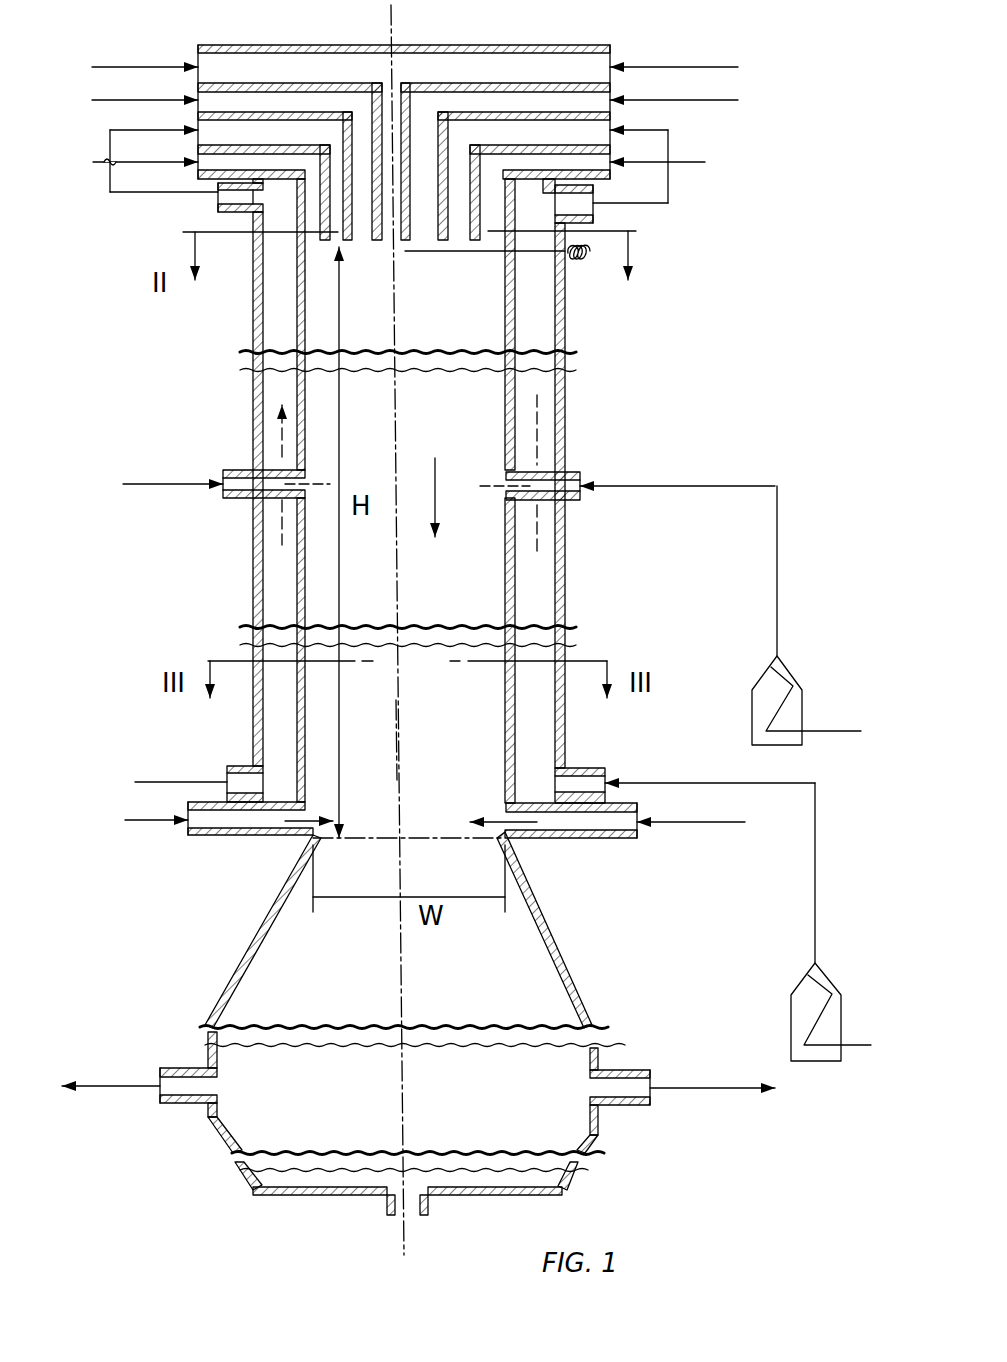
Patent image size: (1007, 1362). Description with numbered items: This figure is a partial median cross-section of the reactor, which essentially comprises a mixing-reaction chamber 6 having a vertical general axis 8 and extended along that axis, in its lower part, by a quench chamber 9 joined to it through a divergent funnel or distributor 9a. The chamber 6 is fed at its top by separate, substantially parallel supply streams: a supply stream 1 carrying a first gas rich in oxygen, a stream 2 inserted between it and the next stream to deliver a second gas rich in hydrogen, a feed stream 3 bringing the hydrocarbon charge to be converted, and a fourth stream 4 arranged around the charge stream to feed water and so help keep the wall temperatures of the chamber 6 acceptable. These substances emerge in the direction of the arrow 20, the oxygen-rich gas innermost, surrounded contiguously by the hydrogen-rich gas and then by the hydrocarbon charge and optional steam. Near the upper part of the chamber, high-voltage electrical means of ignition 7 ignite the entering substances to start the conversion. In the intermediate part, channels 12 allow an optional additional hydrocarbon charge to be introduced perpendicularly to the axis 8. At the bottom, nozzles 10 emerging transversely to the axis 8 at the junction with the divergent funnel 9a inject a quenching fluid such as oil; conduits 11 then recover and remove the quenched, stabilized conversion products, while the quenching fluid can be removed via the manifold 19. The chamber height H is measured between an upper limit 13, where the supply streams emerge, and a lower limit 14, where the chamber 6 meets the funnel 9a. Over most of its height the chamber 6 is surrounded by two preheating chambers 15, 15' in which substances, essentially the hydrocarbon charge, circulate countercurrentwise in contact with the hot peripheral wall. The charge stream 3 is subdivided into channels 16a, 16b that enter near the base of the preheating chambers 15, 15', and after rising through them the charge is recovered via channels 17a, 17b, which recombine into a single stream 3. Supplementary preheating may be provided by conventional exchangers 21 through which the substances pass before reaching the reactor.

The supply stream 1 is at (392, 133).
The stream 2 is at (363, 107).
The feed stream 3 is at (458, 227).
The fourth stream 4 is at (264, 220).
The mixing-reaction chamber 6 is at (452, 603).
The electrical means of ignition 7 is at (405, 252).
The vertical general axis 8 is at (404, 735).
The quench chamber 9 is at (344, 997).
The divergent funnel 9a is at (557, 952).
The nozzles 10 is at (218, 822).
The conduits 11 is at (183, 1087).
The channels 12 is at (238, 485).
The upper limit 13 is at (376, 240).
The lower limit 14 is at (353, 847).
The preheating chamber 15 is at (558, 491).
The preheating chamber 15' is at (248, 490).
The channel 16a is at (590, 787).
The channel 16b is at (242, 782).
The channel 17a is at (587, 208).
The channel 17b is at (218, 197).
The manifold 19 is at (393, 1200).
The arrow 20 is at (437, 492).
The exchanger 21 is at (804, 699).